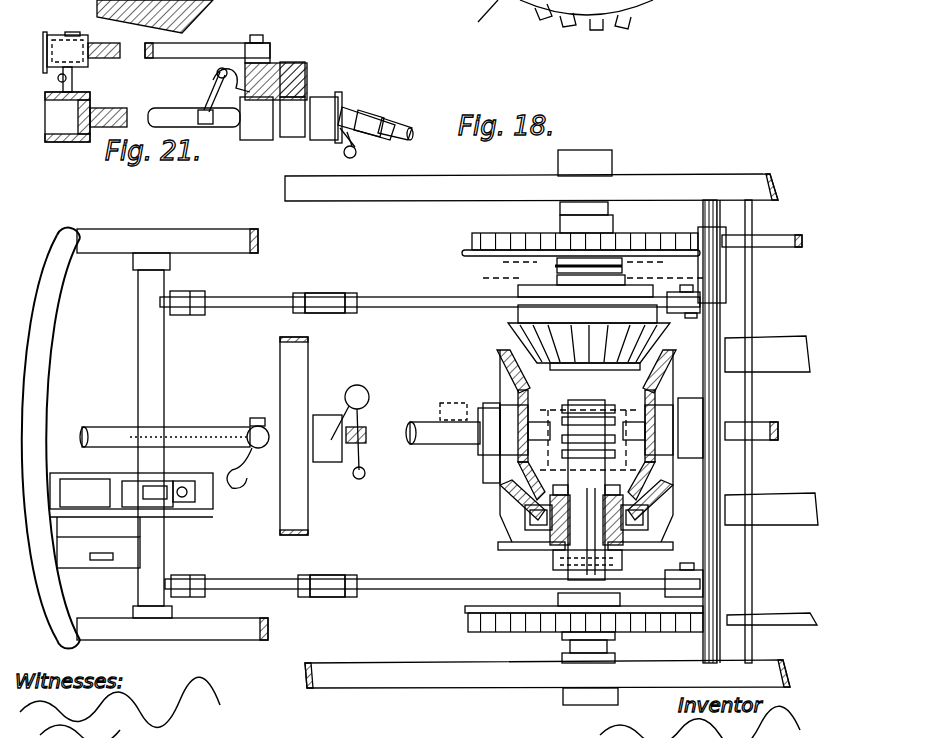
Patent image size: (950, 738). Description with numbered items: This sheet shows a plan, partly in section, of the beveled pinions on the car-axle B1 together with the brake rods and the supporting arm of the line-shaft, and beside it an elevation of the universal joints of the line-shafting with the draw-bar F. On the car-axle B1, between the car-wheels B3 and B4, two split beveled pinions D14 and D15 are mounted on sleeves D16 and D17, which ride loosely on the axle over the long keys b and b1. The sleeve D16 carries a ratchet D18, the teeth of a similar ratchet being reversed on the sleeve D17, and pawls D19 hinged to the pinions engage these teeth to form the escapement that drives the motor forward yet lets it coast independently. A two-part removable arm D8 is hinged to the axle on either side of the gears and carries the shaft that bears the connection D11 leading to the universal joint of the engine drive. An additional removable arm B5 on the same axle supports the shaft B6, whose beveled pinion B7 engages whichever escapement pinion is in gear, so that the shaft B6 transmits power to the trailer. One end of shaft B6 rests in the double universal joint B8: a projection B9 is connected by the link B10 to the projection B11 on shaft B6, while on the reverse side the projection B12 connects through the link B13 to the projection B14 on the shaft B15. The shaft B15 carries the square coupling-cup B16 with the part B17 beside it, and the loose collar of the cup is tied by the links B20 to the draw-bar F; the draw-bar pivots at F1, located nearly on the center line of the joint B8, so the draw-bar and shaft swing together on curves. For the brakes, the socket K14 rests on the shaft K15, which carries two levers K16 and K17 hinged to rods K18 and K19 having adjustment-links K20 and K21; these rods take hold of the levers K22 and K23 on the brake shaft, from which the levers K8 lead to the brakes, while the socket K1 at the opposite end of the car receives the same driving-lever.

In FIG. 21, the links B20 is at (44, 58).
In FIG. 21, the slide block B17 is at (60, 78).
In FIG. 21, the shaft B15 is at (104, 112).
In FIG. 21, the square coupling-cup B16 is at (68, 122).
In FIG. 21, the draw-bar F is at (192, 50).
In FIG. 18, the draw-bar F is at (200, 428).
In FIG. 21, the pivot F1 is at (263, 50).
In FIG. 18, the pivot F1 is at (258, 427).
In FIG. 21, the link B13 is at (193, 95).
In FIG. 21, the projection B14 is at (215, 80).
In FIG. 21, the projection B12 is at (218, 76).
In FIG. 18, the projection B12 is at (248, 488).
In FIG. 21, the universal joint B8 is at (352, 74).
In FIG. 18, the universal joint B8 is at (333, 455).
In FIG. 21, the projection B11 is at (367, 118).
In FIG. 21, the shaft B6 is at (397, 128).
In FIG. 18, the shaft B6 is at (452, 440).
In FIG. 21, the projection B9 is at (344, 155).
In FIG. 21, the link B10 is at (358, 150).
In FIG. 18, the pawls D19 is at (478, 22).
In FIG. 18, the shaft K15 is at (152, 384).
In FIG. 18, the lever K17 is at (190, 303).
In FIG. 18, the rod K18 is at (268, 298).
In FIG. 18, the adjustment-link K20 is at (320, 300).
In FIG. 18, the lever K22 is at (705, 302).
In FIG. 18, the lever K16 is at (180, 588).
In FIG. 18, the rod K19 is at (266, 582).
In FIG. 18, the adjustment-link K21 is at (326, 586).
In FIG. 18, the lever K23 is at (705, 590).
In FIG. 18, the socket K1 is at (716, 552).
In FIG. 18, the connection D11 is at (765, 434).
In FIG. 18, the lever K8 is at (796, 622).
In FIG. 18, the car-wheel B3 is at (506, 242).
In FIG. 18, the sleeve D17 is at (573, 268).
In FIG. 18, the long key b is at (590, 287).
In FIG. 18, the beveled pinion D14 is at (518, 315).
In FIG. 18, the removable arm D8 is at (668, 400).
In FIG. 18, the base D is at (673, 488).
In FIG. 18, the long key b1 is at (592, 545).
In FIG. 18, the sleeve D16 is at (557, 552).
In FIG. 18, the ratchet D18 is at (540, 532).
In FIG. 18, the beveled pinion D15 is at (537, 507).
In FIG. 18, the beveled pinion B7 is at (507, 475).
In FIG. 18, the removable arm B5 is at (468, 452).
In FIG. 18, the car-wheel B4 is at (470, 620).
In FIG. 18, the car-axle B1 is at (585, 645).
In FIG. 18, the socket K14 is at (140, 483).